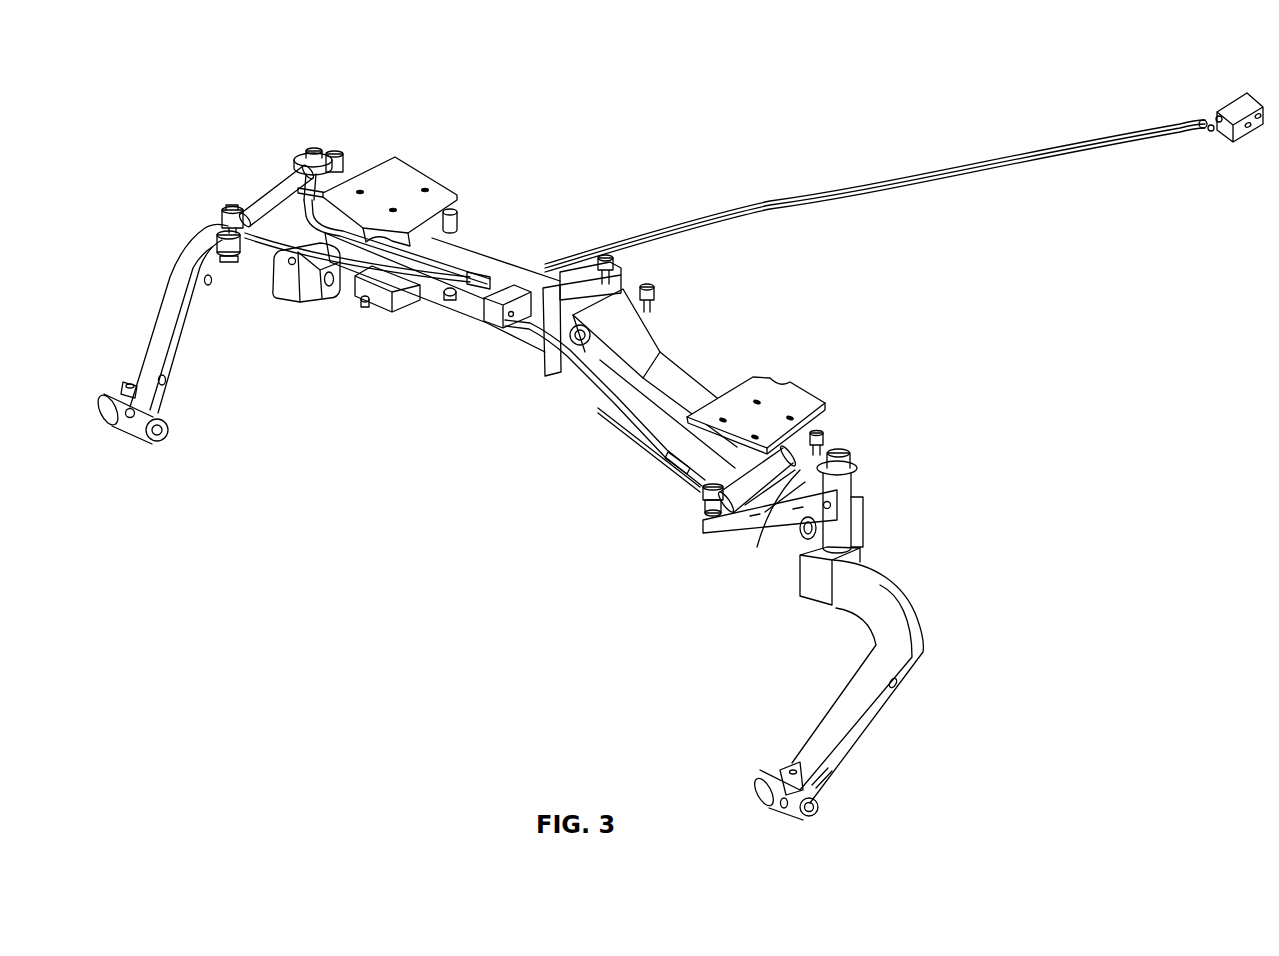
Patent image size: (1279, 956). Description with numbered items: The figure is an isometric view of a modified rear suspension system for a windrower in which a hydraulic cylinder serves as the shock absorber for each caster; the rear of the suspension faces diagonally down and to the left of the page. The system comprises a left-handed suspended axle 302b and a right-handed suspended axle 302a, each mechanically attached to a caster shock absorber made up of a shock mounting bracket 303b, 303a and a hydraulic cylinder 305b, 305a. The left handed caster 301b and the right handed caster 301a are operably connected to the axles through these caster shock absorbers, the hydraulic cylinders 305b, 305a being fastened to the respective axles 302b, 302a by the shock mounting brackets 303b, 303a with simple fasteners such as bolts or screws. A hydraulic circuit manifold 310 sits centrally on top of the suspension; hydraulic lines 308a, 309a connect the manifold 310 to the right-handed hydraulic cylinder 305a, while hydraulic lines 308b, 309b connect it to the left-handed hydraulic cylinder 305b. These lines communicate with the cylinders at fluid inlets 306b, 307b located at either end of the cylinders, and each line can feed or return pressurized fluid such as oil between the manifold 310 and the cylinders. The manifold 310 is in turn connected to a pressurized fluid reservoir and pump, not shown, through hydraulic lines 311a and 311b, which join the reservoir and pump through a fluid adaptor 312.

The right handed caster 301a is at (922, 645).
The left handed caster 301b is at (180, 272).
The right handed suspended axle 302a is at (693, 380).
The left-handed suspended axle 302b is at (493, 263).
The shock mounting bracket 303a is at (862, 535).
The shock mounting bracket 303b is at (220, 236).
The right-handed hydraulic cylinder 305a is at (763, 508).
The left-handed hydraulic cylinder 305b is at (262, 198).
The fluid inlet 306b is at (247, 248).
The fluid inlet 307b is at (322, 153).
The hydraulic line 308a is at (645, 433).
The hydraulic line 308b is at (427, 297).
The hydraulic line 309a is at (612, 391).
The hydraulic line 309b is at (445, 256).
The hydraulic circuit manifold 310 is at (490, 318).
The hydraulic line 311a is at (980, 165).
The hydraulic line 311b is at (1012, 173).
The fluid adaptor 312 is at (1225, 102).